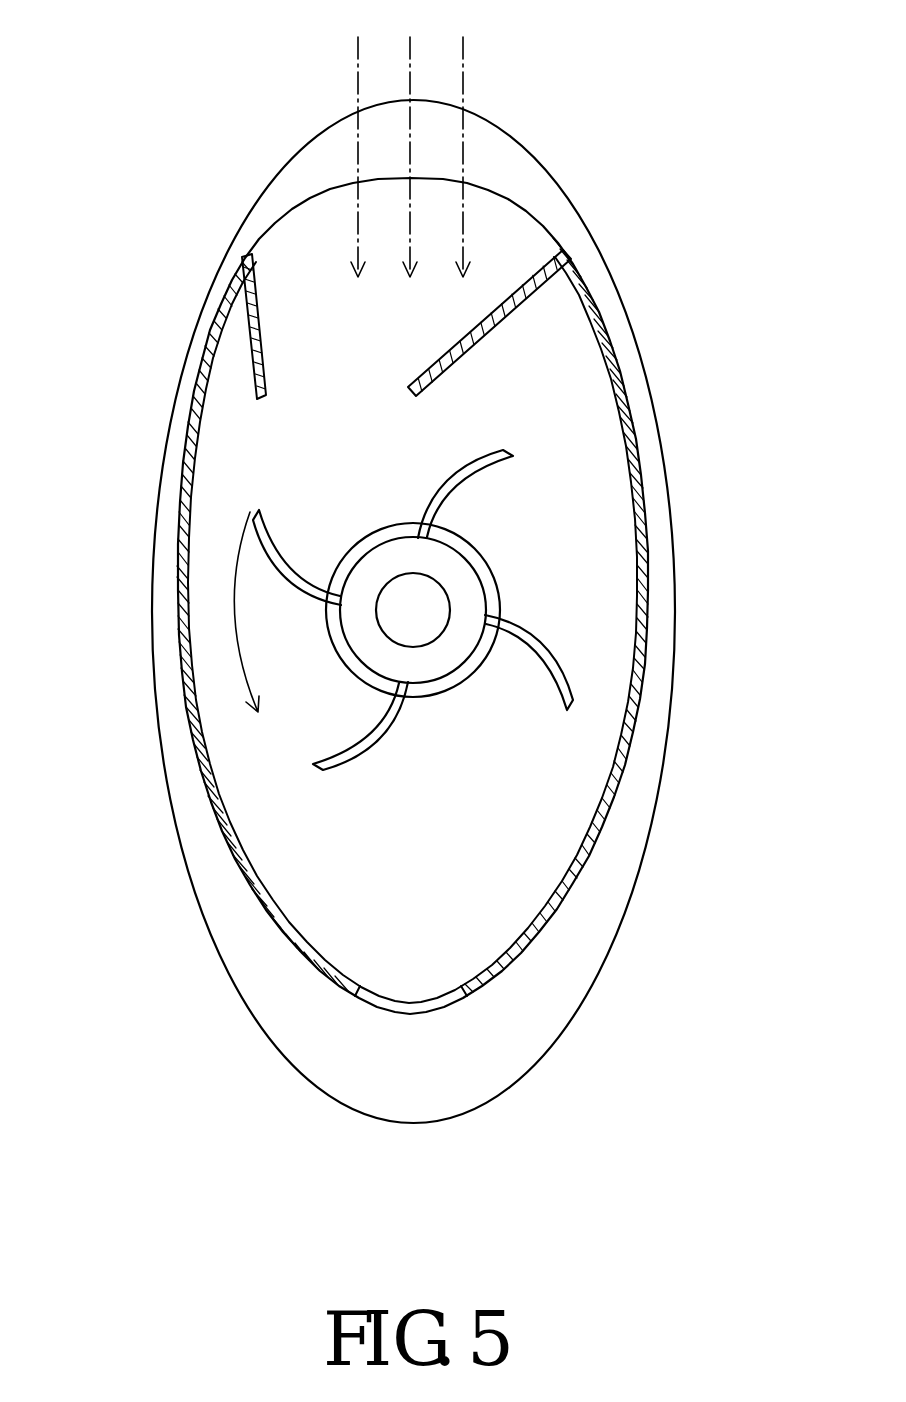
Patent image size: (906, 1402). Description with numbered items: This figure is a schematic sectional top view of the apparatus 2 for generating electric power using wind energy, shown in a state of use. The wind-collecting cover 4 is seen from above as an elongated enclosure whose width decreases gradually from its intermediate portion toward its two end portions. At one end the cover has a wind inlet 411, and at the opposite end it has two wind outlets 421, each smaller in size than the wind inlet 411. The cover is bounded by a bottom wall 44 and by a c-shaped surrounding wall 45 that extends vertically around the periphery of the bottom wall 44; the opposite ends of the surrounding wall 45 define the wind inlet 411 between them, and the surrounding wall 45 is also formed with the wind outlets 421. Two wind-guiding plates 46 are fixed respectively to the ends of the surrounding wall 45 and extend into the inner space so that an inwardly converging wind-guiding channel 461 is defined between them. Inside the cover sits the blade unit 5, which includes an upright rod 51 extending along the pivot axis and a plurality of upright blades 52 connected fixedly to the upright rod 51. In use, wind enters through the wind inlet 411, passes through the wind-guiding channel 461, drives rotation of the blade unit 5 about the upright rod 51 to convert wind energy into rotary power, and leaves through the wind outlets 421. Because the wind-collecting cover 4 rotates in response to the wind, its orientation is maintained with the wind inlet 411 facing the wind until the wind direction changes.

The apparatus 2 is at (662, 155).
The wind-collecting cover 4 is at (628, 833).
The wind inlet 411 is at (505, 247).
The wind outlets 421 is at (407, 1010).
The bottom wall 44 is at (273, 220).
The surrounding wall 45 is at (178, 538).
The wind-guiding plates 46 is at (258, 348).
The wind-guiding channel 461 is at (437, 308).
The blade unit 5 is at (540, 720).
The upright rod 51 is at (455, 680).
The upright blades 52 is at (457, 485).